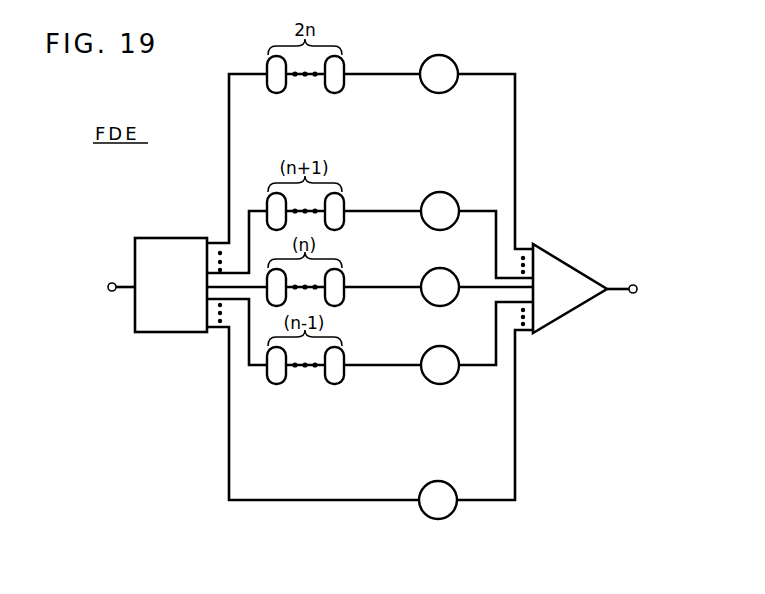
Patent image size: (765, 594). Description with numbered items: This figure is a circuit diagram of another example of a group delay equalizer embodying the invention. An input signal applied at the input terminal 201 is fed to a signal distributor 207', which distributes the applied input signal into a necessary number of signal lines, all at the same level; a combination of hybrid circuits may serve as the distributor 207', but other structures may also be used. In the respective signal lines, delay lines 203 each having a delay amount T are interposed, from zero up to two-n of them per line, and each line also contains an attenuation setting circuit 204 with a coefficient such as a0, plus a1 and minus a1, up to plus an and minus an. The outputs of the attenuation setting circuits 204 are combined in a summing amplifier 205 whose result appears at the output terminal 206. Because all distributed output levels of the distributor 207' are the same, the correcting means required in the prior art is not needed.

The input terminal 201 is at (110, 292).
The signal distributor 207' is at (171, 270).
The delay element T 203 is at (275, 94).
The attenuation setting circuit 204 is at (430, 57).
The summing amplifier 205 is at (587, 273).
The output terminal 206 is at (636, 284).